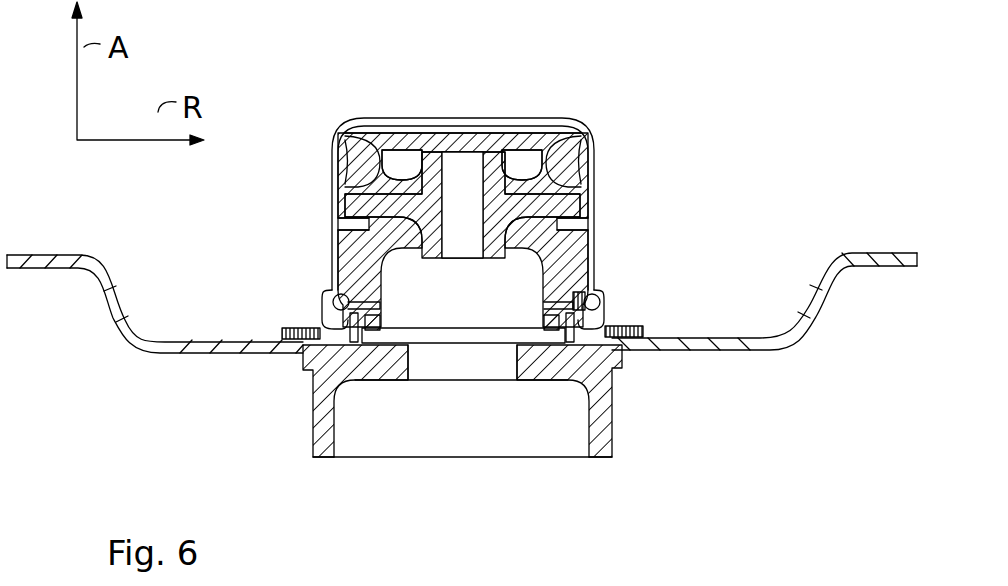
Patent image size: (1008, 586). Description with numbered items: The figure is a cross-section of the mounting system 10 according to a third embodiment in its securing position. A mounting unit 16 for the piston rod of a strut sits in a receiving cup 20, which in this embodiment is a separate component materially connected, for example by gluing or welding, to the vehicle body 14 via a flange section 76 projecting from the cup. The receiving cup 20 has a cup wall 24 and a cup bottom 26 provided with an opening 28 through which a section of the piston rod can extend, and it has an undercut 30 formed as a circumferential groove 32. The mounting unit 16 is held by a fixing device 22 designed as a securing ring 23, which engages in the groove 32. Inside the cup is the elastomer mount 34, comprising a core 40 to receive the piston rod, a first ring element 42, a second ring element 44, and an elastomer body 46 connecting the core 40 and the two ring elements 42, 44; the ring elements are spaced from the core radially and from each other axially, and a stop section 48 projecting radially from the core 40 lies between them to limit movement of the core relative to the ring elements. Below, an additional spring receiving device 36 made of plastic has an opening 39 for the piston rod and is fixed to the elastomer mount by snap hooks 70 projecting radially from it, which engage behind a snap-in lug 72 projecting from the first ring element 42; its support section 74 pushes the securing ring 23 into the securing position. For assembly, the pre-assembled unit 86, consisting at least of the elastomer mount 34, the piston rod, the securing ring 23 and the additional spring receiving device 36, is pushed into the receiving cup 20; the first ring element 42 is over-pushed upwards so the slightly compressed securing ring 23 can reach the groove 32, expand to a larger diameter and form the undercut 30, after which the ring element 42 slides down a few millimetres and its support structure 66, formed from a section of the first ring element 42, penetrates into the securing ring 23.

The mounting system 10 is at (464, 269).
The vehicle body 14 is at (830, 262).
The mounting unit 16 is at (612, 182).
The receiving cup 20 is at (355, 127).
The fixing device 22 is at (597, 288).
The securing ring 23 is at (600, 302).
The cup wall 24 is at (593, 220).
The cup bottom 26 is at (396, 146).
The opening 28 is at (492, 128).
The undercut 30 is at (332, 294).
The circumferential groove 32 is at (330, 304).
The elastomer mount 34 is at (437, 128).
The additional spring receiving device 36 is at (610, 405).
The opening 39 is at (513, 357).
The core 40 is at (535, 133).
The first ring element 42 is at (597, 248).
The second ring element 44 is at (575, 136).
The elastomer body 46 is at (345, 142).
The stop section 48 is at (591, 205).
The support structure 66 is at (368, 303).
The snap hooks 70 is at (348, 343).
The snap-in lug 72 is at (533, 347).
The support section 74 is at (320, 378).
The flange section 76 is at (290, 330).
The pre-assembled unit 86 is at (481, 132).